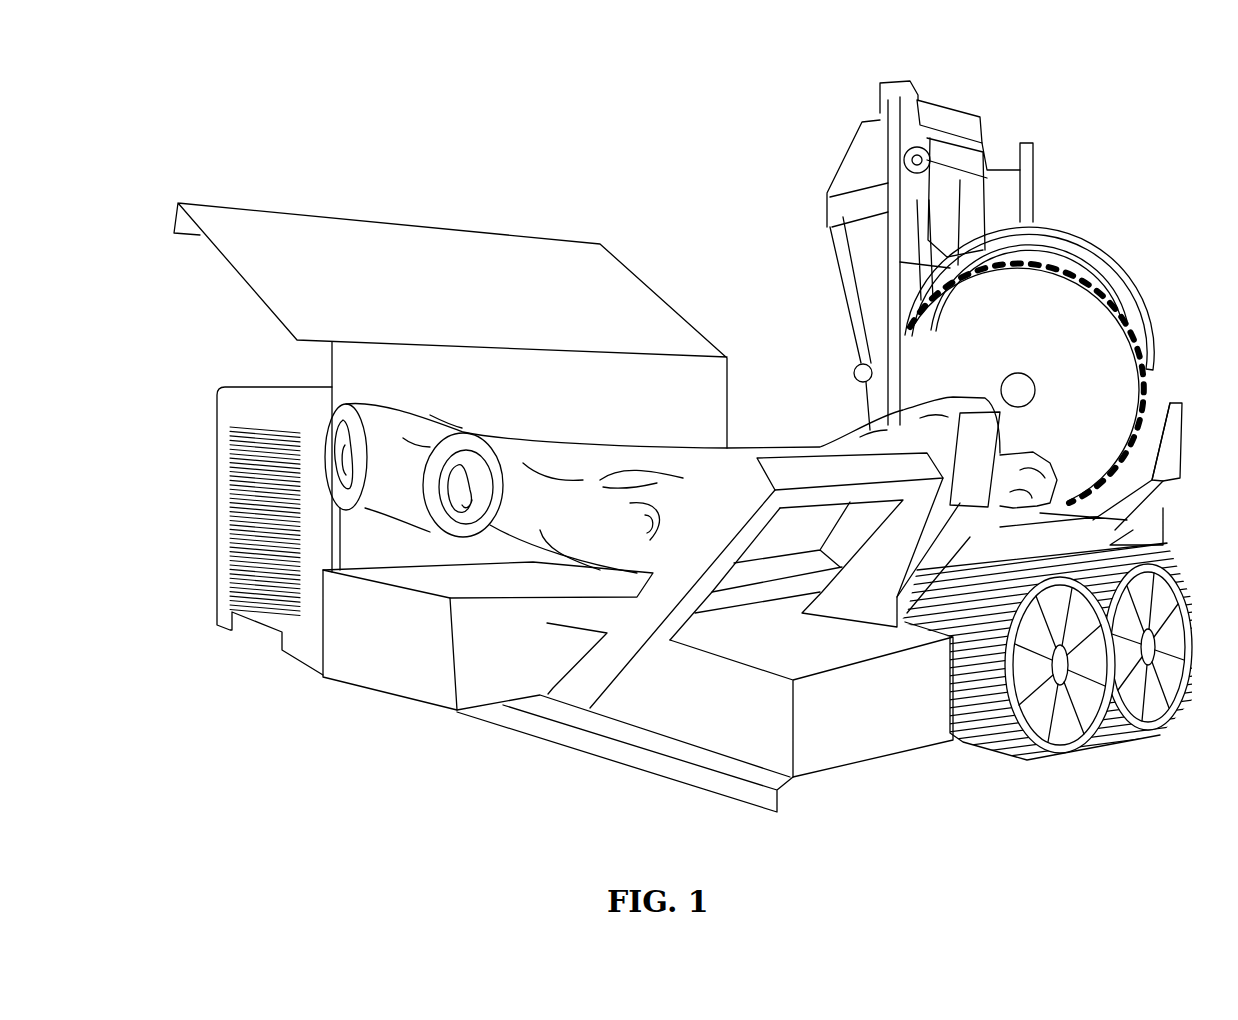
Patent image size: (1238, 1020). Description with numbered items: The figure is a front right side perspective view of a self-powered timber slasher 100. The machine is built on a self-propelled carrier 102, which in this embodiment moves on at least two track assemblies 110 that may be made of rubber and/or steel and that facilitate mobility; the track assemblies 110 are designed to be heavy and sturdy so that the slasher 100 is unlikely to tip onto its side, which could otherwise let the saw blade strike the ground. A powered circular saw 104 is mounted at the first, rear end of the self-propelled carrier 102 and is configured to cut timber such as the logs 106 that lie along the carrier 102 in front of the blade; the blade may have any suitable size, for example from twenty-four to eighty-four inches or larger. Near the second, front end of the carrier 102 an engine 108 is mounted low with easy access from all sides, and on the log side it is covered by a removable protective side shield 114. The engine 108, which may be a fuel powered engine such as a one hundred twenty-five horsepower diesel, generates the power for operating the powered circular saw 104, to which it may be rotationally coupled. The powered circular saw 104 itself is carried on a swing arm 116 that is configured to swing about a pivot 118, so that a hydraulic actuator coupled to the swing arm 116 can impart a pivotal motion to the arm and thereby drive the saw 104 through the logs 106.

The self-powered timber slasher 100 is at (666, 100).
The self-propelled carrier 102 is at (880, 610).
The powered circular saw 104 is at (1090, 313).
The logs 106 is at (337, 487).
The engine 108 is at (247, 366).
The track assemblies 110 is at (1090, 733).
The removable protective side shield 114 is at (298, 240).
The swing arm 116 is at (842, 283).
The pivot 118 is at (923, 150).